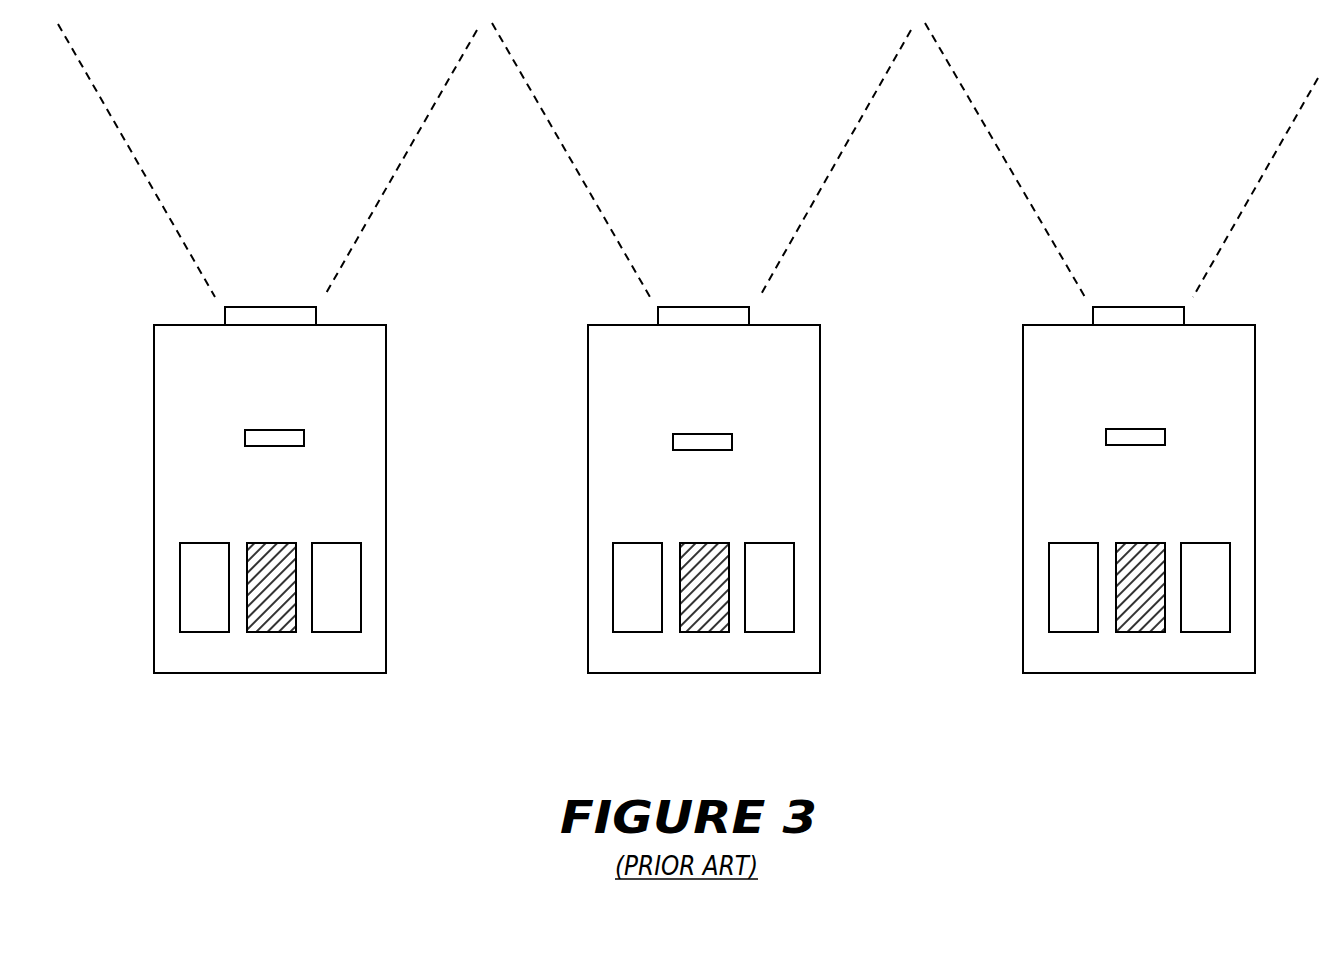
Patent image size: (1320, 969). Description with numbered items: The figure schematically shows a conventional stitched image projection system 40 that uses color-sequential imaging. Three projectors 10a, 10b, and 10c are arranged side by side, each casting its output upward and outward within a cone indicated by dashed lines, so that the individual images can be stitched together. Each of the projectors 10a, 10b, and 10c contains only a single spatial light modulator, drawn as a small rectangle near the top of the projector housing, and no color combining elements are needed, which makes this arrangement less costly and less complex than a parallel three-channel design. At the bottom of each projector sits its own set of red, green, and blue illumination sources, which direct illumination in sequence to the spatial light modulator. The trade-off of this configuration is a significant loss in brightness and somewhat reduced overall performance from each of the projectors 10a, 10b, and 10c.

The stitched image projection system 40 is at (135, 263).
The projector 10a is at (154, 378).
The projector 10b is at (588, 378).
The projector 10c is at (1023, 378).